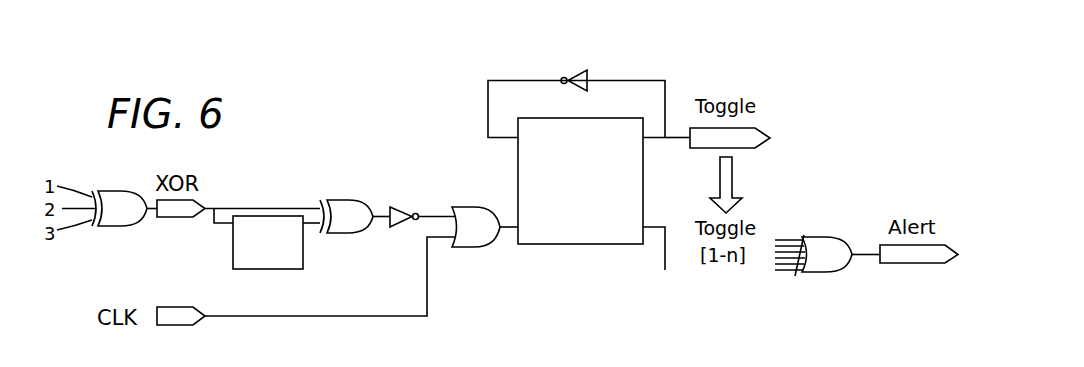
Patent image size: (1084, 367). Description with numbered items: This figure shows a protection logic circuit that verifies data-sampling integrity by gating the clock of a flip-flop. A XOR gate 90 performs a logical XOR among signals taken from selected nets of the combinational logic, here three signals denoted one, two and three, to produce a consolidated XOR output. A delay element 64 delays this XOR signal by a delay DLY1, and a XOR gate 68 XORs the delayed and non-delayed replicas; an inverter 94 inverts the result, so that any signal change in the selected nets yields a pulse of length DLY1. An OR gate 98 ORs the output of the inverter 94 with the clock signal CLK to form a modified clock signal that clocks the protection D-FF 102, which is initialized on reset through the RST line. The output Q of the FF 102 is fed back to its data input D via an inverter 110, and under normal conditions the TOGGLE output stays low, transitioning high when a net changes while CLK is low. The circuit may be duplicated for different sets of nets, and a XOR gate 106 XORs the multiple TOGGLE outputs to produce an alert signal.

The XOR gate 90 is at (120, 227).
The delay element 64 is at (233, 262).
The XOR gate 68 is at (346, 234).
The inverter (NOT gate) 94 is at (410, 206).
The OR gate 98 is at (476, 248).
The protection D-FF 102 is at (586, 245).
The inverter (NOT gate) 110 is at (566, 76).
The XOR gate 106 is at (826, 273).